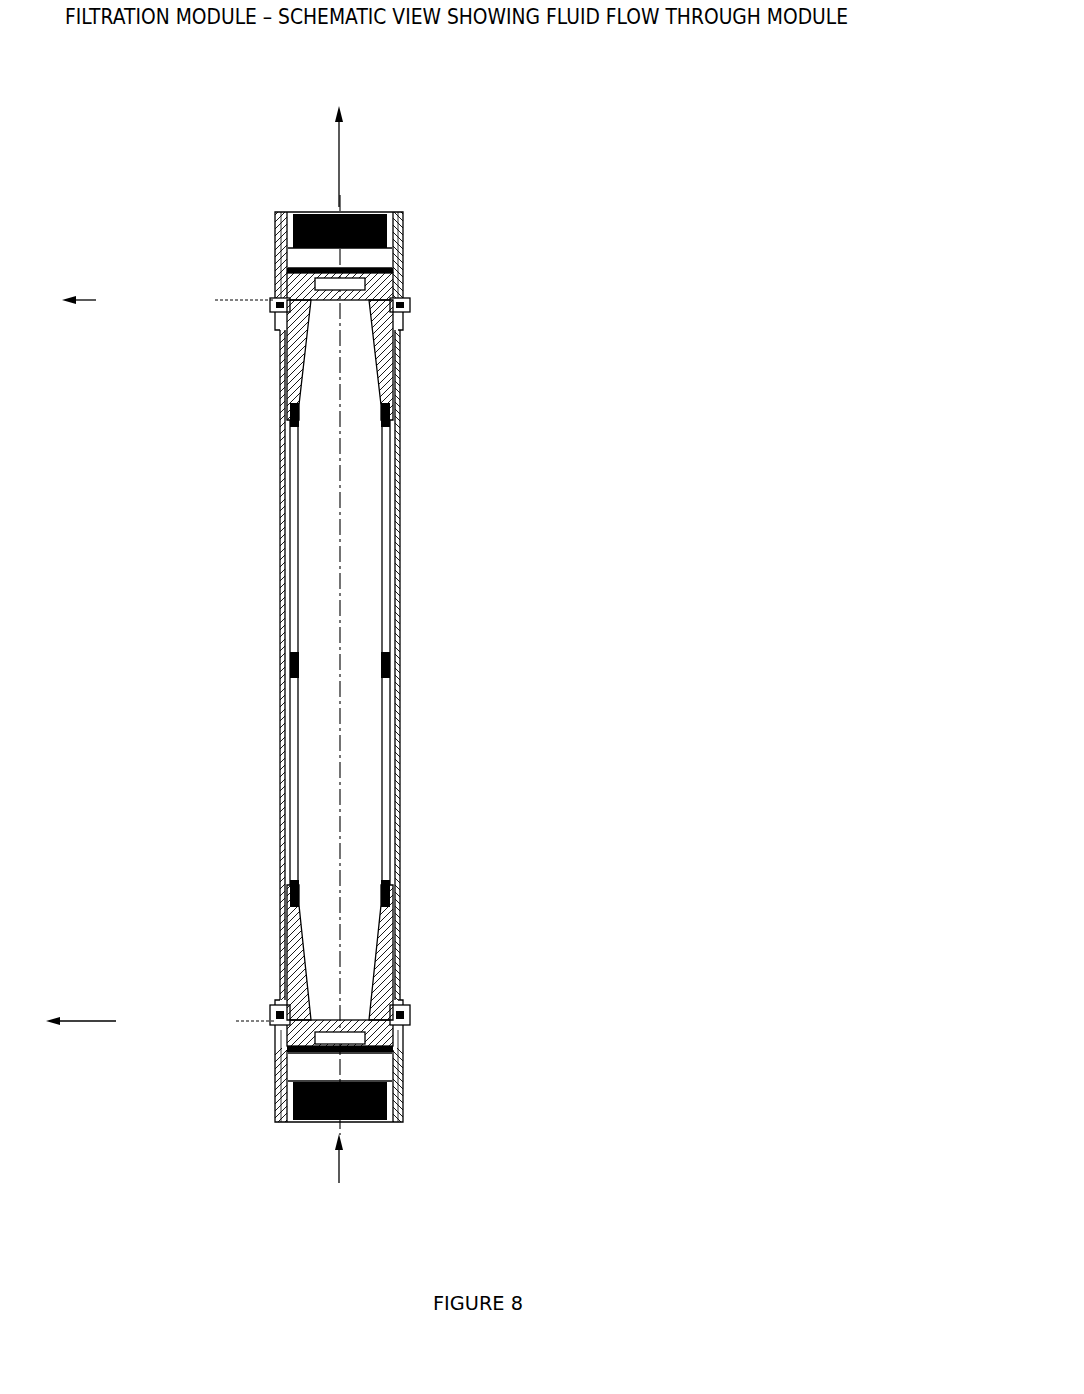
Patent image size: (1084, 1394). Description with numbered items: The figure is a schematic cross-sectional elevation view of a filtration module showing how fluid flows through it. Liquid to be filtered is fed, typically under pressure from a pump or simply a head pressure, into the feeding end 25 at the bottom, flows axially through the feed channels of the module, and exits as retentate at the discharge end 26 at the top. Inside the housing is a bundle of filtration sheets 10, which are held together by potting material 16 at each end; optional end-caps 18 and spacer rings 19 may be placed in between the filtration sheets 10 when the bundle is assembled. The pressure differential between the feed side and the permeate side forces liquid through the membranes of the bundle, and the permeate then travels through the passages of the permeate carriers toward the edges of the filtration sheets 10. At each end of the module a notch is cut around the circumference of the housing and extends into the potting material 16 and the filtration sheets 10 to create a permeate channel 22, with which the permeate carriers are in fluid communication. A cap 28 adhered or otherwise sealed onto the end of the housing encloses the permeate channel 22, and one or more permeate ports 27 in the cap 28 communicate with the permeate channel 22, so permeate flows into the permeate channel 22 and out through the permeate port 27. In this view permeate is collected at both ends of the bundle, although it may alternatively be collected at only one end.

The filtration sheet 10 is at (368, 671).
The potting material 16 is at (395, 988).
The end-cap 18 is at (403, 262).
The spacer ring 19 is at (386, 658).
The permeate channel 22 is at (400, 1030).
The feeding end 25 is at (341, 1159).
The discharge end 26 is at (360, 158).
The permeate port 27 is at (226, 667).
The cap 28 is at (403, 228).